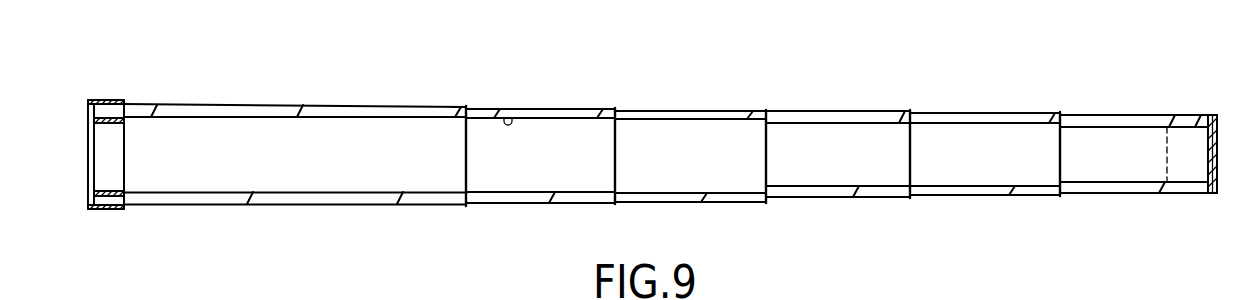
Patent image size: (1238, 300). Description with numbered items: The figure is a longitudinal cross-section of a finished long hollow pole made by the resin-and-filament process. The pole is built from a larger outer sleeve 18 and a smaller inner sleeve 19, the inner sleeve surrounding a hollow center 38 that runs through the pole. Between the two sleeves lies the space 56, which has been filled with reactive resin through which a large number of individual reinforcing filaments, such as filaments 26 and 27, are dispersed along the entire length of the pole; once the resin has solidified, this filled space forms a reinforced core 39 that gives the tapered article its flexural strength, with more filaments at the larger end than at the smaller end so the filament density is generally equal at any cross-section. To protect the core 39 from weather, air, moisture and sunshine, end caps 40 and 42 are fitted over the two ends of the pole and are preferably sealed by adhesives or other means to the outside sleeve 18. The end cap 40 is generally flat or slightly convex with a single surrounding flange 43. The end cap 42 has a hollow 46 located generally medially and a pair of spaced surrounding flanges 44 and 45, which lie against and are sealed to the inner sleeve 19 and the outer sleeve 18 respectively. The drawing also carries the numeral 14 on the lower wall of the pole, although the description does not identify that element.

The telescoping tube assembly 14 is at (784, 197).
The outer sleeve 18 is at (180, 105).
The inner sleeve 19 is at (245, 119).
The reinforcing filament 26 is at (665, 112).
The reinforcing filament 27 is at (802, 113).
The hollow center 38 is at (330, 170).
The reinforced core 39 is at (300, 113).
The end cap 40 is at (1217, 130).
The end cap 42 is at (88, 120).
The surrounding flange 43 is at (1177, 113).
The surrounding flange 44 is at (107, 188).
The surrounding flange 45 is at (104, 207).
The hollow 46 is at (103, 155).
The space between sleeves 56 is at (508, 120).